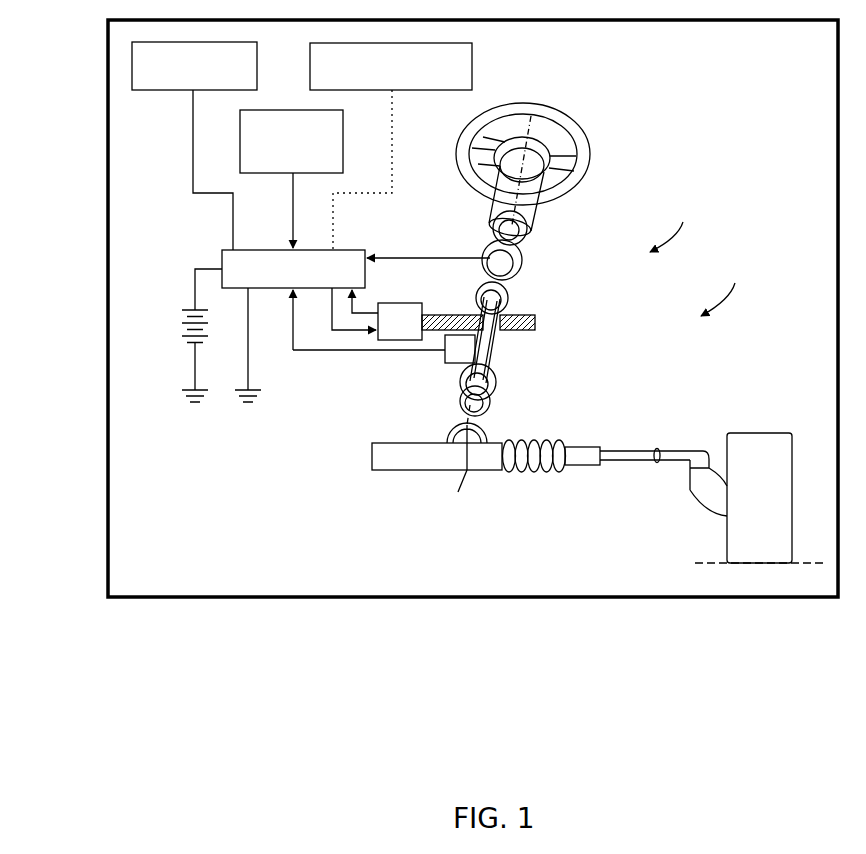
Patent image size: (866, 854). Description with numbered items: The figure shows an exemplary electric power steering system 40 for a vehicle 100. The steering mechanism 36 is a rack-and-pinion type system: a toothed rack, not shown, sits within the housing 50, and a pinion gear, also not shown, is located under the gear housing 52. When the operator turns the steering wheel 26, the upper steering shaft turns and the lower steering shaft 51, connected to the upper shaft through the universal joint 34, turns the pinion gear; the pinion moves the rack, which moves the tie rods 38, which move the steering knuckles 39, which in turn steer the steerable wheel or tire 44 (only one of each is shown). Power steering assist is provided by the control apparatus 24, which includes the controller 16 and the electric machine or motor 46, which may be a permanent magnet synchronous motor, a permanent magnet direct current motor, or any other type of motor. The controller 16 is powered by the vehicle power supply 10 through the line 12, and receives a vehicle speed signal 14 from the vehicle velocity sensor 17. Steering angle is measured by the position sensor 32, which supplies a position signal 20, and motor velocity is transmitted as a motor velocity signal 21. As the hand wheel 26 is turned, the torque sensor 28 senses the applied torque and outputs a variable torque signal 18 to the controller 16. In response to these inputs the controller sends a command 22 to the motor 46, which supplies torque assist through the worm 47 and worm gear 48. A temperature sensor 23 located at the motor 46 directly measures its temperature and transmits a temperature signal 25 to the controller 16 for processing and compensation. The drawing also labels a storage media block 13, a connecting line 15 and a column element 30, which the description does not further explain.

The vehicle 100 is at (108, 65).
The vehicle power supply 10 is at (180, 330).
The line 12 is at (207, 265).
The storage media 13 is at (153, 95).
The vehicle speed signal 14 is at (283, 186).
The connection line 15 is at (192, 136).
The controller 16 is at (274, 248).
The vehicle velocity sensor 17 is at (293, 108).
The variable torque signal 18 is at (432, 257).
The position signal 20 is at (369, 352).
The motor velocity signal 21 is at (367, 306).
The command 22 is at (342, 351).
The temperature sensor 23 is at (474, 75).
The control apparatus 24 is at (669, 228).
The temperature signal 25 is at (396, 132).
The steering wheel 26 is at (558, 120).
The torque sensor 28 is at (493, 236).
The steering angle sensor 30 is at (522, 262).
The position sensor 32 is at (443, 358).
The universal joint 34 is at (497, 382).
The steering mechanism 36 is at (553, 442).
The tie rods 38 is at (625, 461).
The steering knuckles 39 is at (704, 492).
The electric power steering system 40 is at (721, 290).
The steerable wheel 44 is at (753, 440).
The motor 46 is at (508, 298).
The worm 47 is at (536, 323).
The worm gear 48 is at (406, 302).
The housing 50 is at (398, 471).
The lower steering shaft 51 is at (490, 404).
The gear housing 52 is at (448, 432).